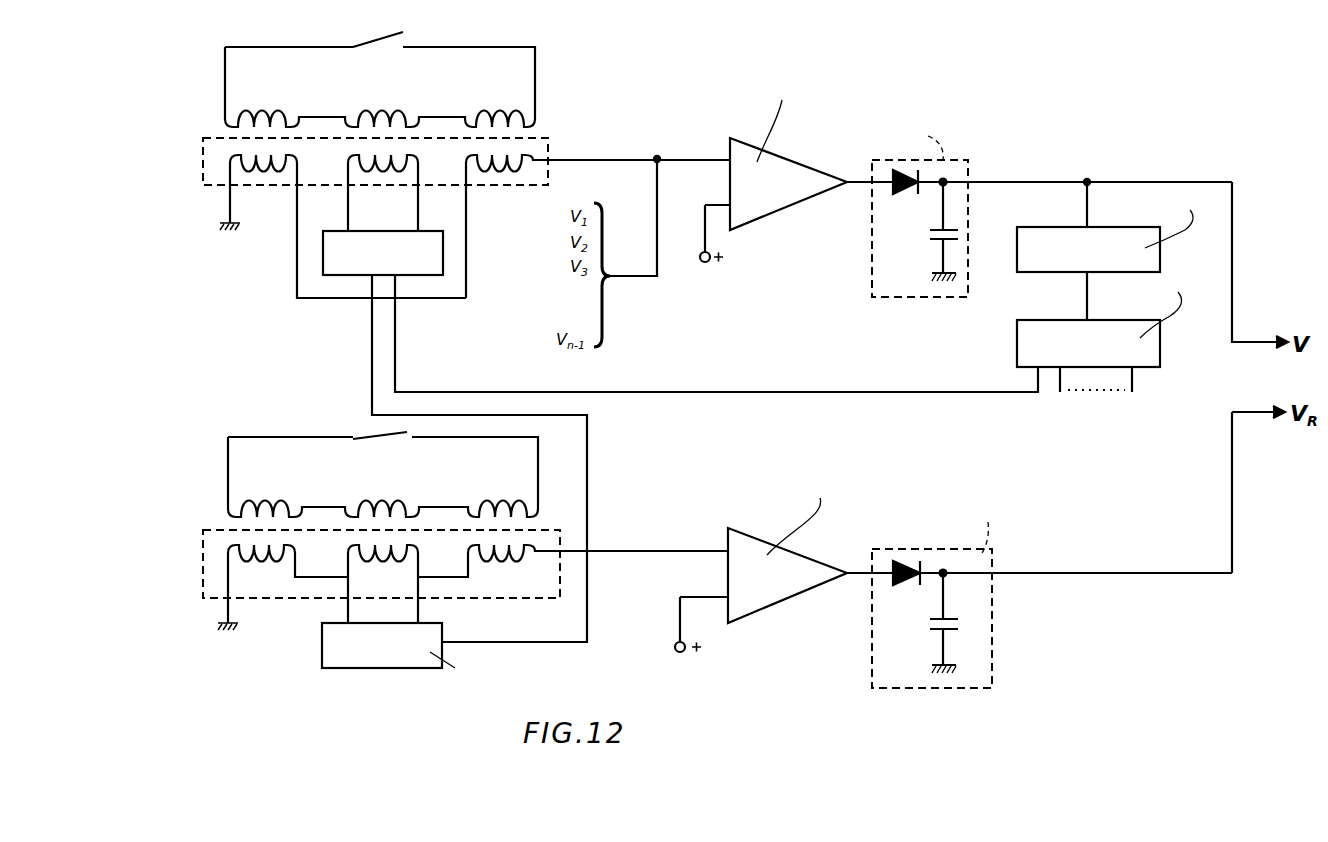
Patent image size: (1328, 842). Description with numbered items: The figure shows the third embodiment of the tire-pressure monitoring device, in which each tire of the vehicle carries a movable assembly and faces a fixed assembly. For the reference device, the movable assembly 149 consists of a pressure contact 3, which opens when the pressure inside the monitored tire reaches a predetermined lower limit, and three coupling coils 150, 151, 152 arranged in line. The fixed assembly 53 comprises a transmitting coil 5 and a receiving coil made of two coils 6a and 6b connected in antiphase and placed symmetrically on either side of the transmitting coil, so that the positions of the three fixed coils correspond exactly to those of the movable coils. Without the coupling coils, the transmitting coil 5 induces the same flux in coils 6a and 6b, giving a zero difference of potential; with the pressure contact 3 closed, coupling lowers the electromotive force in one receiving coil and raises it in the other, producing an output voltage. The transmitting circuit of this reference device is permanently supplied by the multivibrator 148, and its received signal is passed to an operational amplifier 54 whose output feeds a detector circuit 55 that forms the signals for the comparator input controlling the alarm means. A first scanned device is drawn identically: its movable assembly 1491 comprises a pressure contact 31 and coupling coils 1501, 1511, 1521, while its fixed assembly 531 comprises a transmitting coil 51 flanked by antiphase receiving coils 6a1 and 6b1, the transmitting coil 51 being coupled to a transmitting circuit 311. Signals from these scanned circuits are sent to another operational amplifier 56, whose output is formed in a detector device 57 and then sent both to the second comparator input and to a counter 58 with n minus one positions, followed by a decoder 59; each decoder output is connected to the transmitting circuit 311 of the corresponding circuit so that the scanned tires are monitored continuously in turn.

The pressure contact 3 is at (373, 435).
The pressure contact 31 is at (381, 46).
The movable assembly 149 is at (228, 482).
The movable assembly 1491 is at (227, 96).
The coupling coil 151 is at (262, 498).
The coupling coil 1511 is at (264, 114).
The coupling coil 150 is at (393, 482).
The coupling coil 1501 is at (382, 113).
The coupling coil 152 is at (506, 482).
The coupling coil 1521 is at (502, 113).
The fixed assembly 53 is at (204, 559).
The fixed assembly 531 is at (203, 160).
The receiving coil 6a is at (260, 573).
The receiving coil 6a1 is at (264, 169).
The transmitting coil 5 is at (381, 575).
The transmitting coil 51 is at (384, 168).
The receiving coil 6b is at (514, 570).
The receiving coil 6b1 is at (510, 170).
The transmitting circuit 311 is at (680, 436).
The multivibrator 148 is at (454, 651).
The operational amplifier 56 is at (783, 173).
The operational amplifier 54 is at (784, 564).
The detector device 57 is at (890, 243).
The detector circuit 55 is at (980, 613).
The counter 58 is at (1105, 227).
The decoder 59 is at (1099, 341).